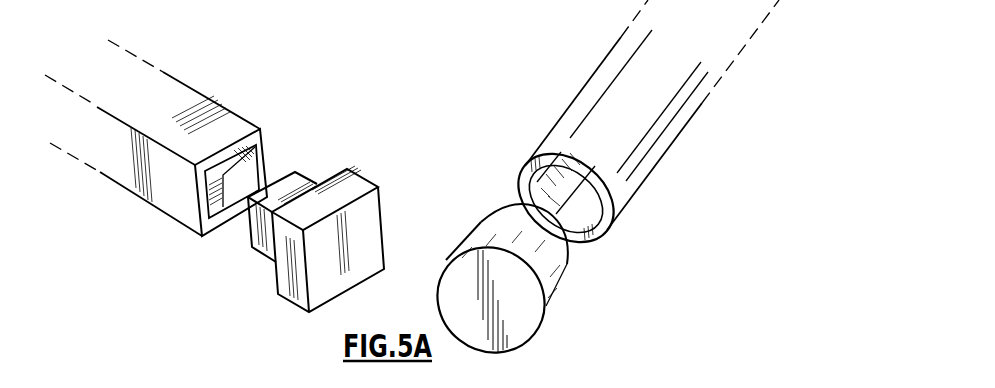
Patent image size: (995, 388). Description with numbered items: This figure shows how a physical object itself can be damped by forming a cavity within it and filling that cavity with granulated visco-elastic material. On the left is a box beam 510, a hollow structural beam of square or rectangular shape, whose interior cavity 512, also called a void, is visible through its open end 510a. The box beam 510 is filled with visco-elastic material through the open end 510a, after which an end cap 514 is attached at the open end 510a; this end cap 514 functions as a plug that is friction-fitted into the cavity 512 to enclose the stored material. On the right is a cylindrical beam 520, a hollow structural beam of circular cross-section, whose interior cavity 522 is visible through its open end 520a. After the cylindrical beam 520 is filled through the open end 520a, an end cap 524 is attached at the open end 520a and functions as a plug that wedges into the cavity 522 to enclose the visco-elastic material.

The box beam 510 is at (183, 120).
The open end 510a is at (259, 148).
The interior cavity 512 is at (225, 200).
The end cap 514 is at (282, 266).
The cylindrical beam 520 is at (660, 107).
The open end 520a is at (604, 228).
The interior cavity 522 is at (560, 208).
The end cap 524 is at (552, 298).